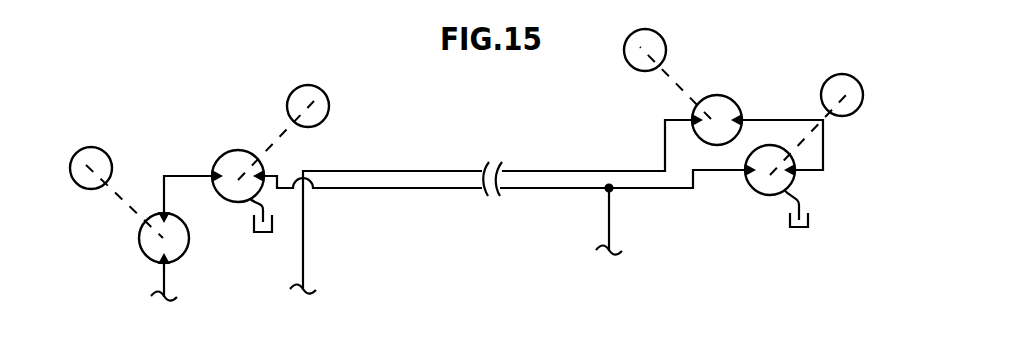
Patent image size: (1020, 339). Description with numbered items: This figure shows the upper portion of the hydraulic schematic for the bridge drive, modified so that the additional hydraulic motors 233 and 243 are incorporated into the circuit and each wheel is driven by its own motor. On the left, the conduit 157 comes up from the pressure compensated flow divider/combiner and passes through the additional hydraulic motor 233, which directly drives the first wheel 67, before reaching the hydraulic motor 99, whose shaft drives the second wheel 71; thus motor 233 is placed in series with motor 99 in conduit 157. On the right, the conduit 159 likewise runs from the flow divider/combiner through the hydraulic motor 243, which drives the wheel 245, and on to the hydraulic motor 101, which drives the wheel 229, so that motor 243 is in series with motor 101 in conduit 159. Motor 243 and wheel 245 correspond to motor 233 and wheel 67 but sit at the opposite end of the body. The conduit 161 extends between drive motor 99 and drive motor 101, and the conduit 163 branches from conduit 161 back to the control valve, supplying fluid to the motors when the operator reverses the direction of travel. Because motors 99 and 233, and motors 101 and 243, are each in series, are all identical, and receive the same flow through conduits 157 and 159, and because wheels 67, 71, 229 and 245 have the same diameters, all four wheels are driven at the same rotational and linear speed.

The first wheel 67 is at (92, 156).
The second wheel 71 is at (320, 112).
The hydraulic motor 99 is at (243, 160).
The hydraulic motor 101 is at (790, 185).
The conduit 157 is at (162, 277).
The conduit 159 is at (402, 170).
The conduit 161 is at (368, 190).
The conduit 163 is at (609, 229).
The wheel 229 is at (850, 82).
The additional hydraulic motor 233 is at (150, 241).
The hydraulic motor 243 is at (720, 100).
The wheel 245 is at (655, 44).